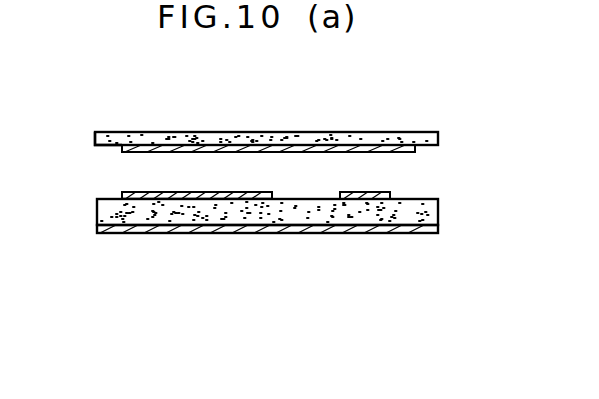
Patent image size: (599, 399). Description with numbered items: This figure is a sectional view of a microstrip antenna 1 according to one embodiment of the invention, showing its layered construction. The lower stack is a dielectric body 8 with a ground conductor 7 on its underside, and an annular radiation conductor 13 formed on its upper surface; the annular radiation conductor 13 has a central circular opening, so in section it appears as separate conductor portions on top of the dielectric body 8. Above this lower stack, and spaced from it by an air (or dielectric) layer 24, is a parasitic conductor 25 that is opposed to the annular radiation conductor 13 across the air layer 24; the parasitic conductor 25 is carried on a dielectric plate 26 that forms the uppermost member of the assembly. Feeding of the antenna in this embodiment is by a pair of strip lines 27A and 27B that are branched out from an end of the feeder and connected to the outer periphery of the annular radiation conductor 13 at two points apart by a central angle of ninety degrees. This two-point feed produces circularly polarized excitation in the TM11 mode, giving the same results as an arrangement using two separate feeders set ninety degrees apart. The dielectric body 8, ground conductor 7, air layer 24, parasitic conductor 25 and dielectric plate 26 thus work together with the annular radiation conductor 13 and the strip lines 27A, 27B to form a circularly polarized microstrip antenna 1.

The microstrip antenna 1 is at (166, 128).
The dielectric plate 26 is at (107, 141).
The parasitic conductor 25 is at (133, 151).
The air layer 24 is at (402, 168).
The strip line 27A is at (125, 195).
The annular radiation conductor 13 is at (390, 192).
The dielectric body 8 is at (440, 208).
The ground conductor 7 is at (375, 234).
The strip line 27B is at (233, 198).